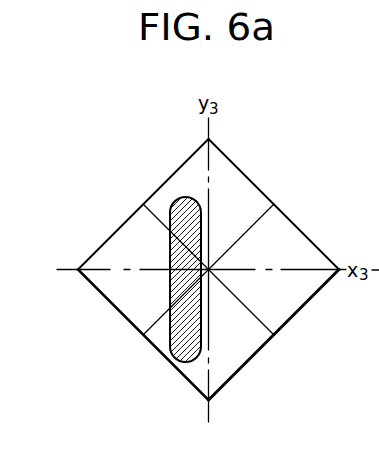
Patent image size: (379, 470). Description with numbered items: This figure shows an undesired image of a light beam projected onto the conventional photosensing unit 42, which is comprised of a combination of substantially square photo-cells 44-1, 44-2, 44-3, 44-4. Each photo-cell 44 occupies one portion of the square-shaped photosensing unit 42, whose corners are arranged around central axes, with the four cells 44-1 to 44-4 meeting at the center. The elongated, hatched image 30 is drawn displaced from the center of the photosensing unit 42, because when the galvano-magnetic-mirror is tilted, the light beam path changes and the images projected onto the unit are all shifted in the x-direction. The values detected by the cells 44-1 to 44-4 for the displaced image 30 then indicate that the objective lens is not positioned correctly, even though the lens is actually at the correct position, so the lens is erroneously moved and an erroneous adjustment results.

The image 30 is at (170, 347).
The photosensing unit 42 is at (313, 187).
The photo-cell 44 is at (367, 337).
The photo-cell 44-1 is at (236, 177).
The photo-cell 44-2 is at (236, 361).
The photo-cell 44-3 is at (113, 288).
The photo-cell 44-4 is at (311, 252).